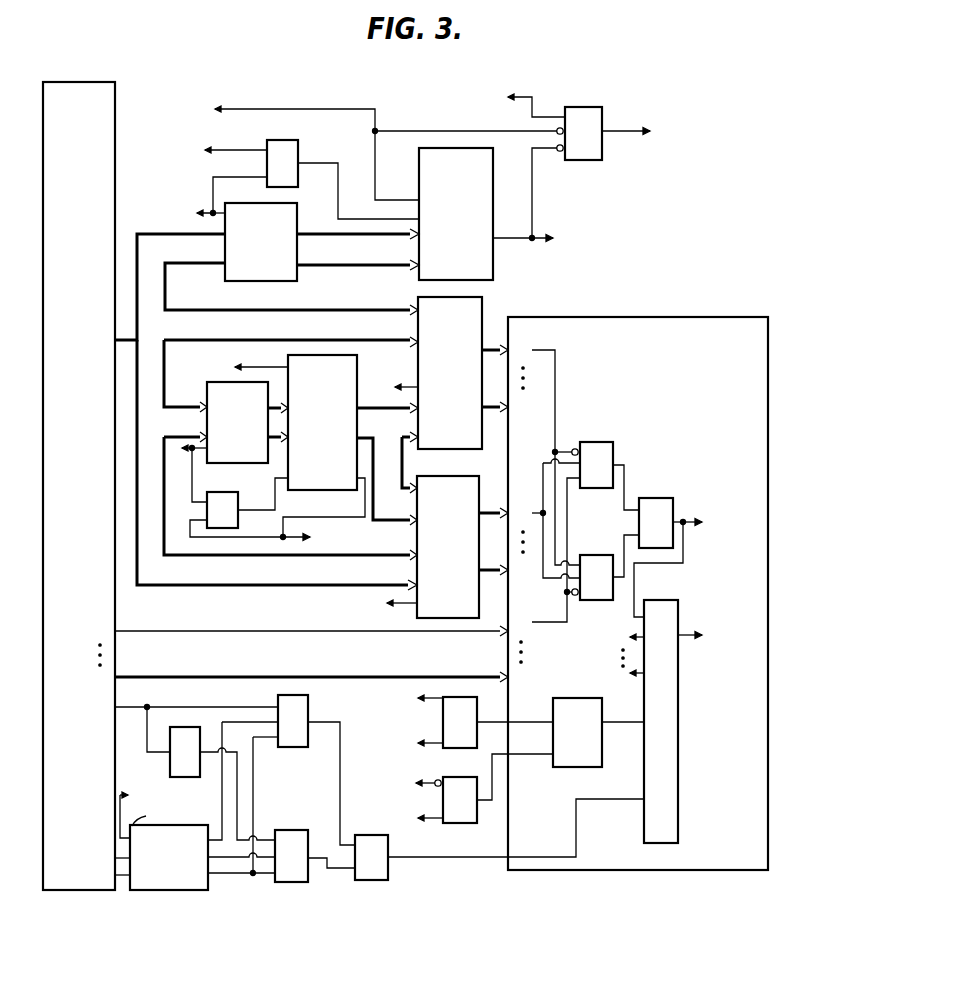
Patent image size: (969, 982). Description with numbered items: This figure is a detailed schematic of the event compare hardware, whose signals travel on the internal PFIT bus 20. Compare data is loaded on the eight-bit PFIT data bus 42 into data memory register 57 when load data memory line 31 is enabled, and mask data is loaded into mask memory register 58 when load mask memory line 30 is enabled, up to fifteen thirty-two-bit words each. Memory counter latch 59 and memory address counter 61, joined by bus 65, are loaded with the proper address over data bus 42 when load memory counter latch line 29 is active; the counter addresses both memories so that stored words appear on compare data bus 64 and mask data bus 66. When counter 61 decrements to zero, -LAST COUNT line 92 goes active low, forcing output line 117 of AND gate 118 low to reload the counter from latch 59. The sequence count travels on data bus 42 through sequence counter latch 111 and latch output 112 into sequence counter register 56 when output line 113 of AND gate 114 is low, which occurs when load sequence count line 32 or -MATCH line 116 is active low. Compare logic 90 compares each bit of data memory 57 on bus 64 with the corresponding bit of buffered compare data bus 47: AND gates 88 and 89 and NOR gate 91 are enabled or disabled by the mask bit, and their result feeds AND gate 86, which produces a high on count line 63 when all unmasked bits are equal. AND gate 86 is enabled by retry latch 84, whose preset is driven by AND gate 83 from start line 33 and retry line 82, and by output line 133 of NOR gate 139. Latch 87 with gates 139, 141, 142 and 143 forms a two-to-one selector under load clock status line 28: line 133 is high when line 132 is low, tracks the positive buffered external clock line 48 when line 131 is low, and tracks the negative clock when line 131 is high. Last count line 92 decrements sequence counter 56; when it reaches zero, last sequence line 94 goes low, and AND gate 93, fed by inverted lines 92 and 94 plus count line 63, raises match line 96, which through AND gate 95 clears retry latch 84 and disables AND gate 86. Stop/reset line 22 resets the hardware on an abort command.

The bus 20 is at (116, 203).
The PFIT data bus 42 is at (125, 367).
The -LAST COUNT line 92 is at (408, 131).
The -MATCH line 116 is at (240, 150).
The AND gate 114 is at (296, 140).
The output line 113 is at (335, 186).
The load sequence count line 32 is at (221, 200).
The sequence counter latch 111 is at (225, 274).
The latch output 112 is at (340, 268).
The sequence counter register 56 is at (493, 186).
The count line 63 is at (510, 97).
The AND gate 93 is at (596, 107).
The match line 96 is at (625, 133).
The last sequence line 94 is at (500, 238).
The data memory register 57 is at (418, 306).
The compare data bus 64 is at (493, 350).
The load data memory line 31 is at (398, 388).
The mask memory register 58 is at (479, 482).
The mask data bus 66 is at (490, 572).
The load mask memory line 30 is at (391, 604).
The memory counter latch 59 is at (202, 385).
The memory address counter 61 is at (357, 366).
The bus 65 is at (274, 447).
The load memory counter latch line 29 is at (185, 471).
The AND gate 118 is at (224, 486).
The output line 117 is at (271, 508).
The compare logic 90 is at (638, 593).
The AND gate 88 is at (588, 442).
The AND gate 89 is at (588, 555).
The NOR gate 91 is at (650, 498).
The AND gate 86 is at (680, 735).
The retry latch 84 is at (602, 712).
The AND gate 83 is at (485, 700).
The retry line 82 is at (436, 705).
The start line 33 is at (420, 744).
The stop/reset line 22 is at (420, 819).
The AND gate 95 is at (477, 820).
The buffered compare data bus 47 is at (252, 631).
The buffered external clock line 48 is at (230, 695).
The inverter 143 is at (170, 768).
The AND gate 141 is at (283, 747).
The load clock status line 28 is at (147, 813).
The line 132 is at (117, 865).
The line 131 is at (123, 878).
The latch 87 is at (182, 890).
The AND gate 142 is at (290, 882).
The NOR gate 139 is at (388, 870).
The output line 133 is at (447, 858).